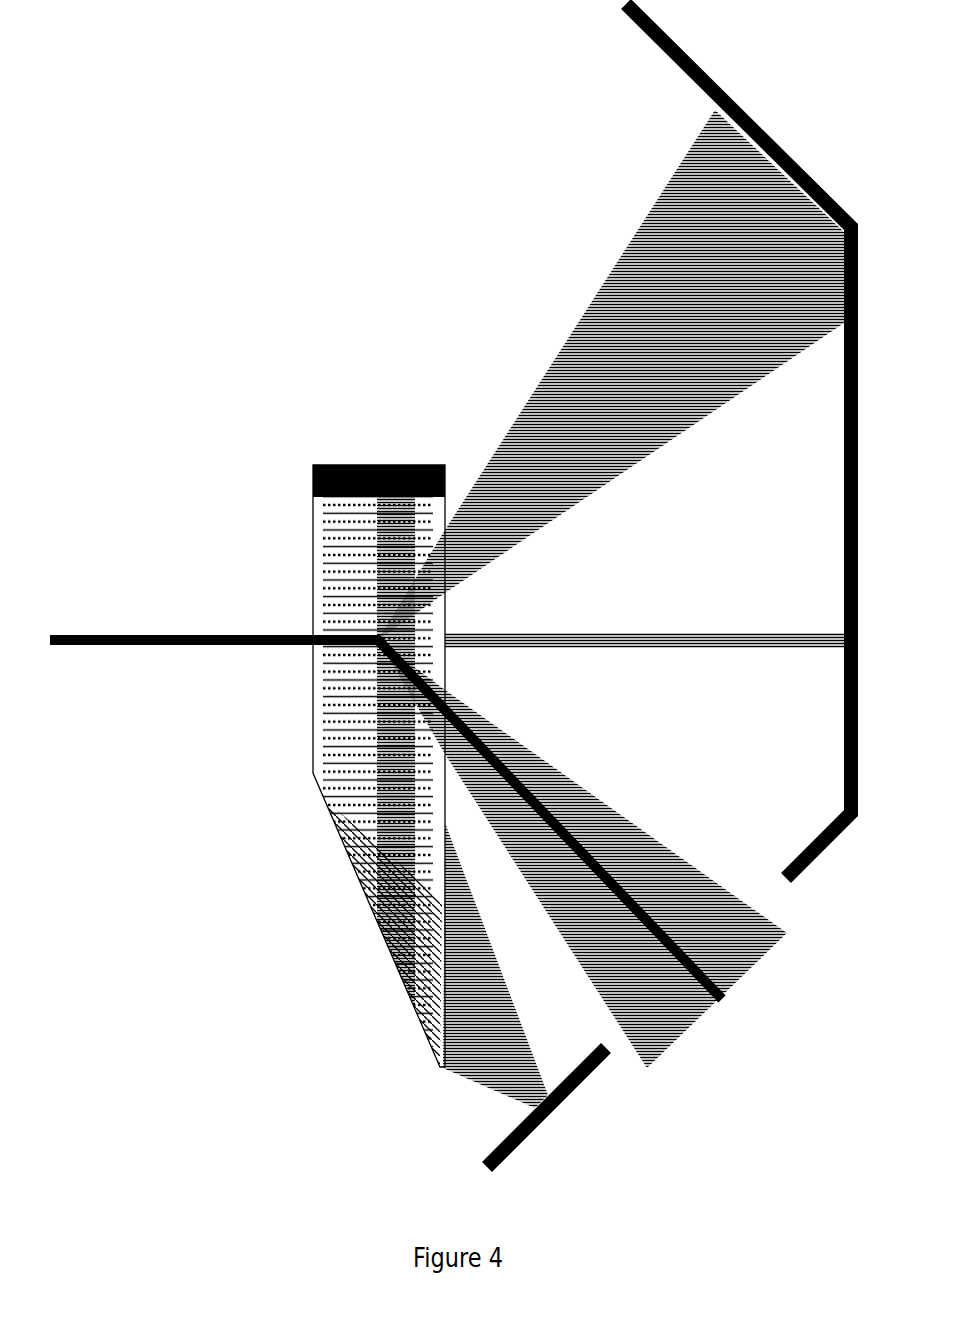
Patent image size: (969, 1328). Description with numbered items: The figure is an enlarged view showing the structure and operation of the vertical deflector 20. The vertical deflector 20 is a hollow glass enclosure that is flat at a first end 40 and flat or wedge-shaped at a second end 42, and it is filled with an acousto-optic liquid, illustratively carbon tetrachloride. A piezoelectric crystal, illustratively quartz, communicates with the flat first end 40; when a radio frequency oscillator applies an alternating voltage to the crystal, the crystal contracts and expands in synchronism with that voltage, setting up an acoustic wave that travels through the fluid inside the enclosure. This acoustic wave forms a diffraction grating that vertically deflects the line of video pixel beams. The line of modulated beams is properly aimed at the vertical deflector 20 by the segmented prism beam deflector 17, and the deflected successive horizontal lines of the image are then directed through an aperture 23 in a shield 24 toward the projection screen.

The segmented prism beam deflector 17 is at (386, 802).
The vertical deflector 20 is at (299, 539).
The aperture 23 is at (790, 897).
The shield 24 is at (738, 441).
The first end 40 is at (299, 478).
The second end 42 is at (392, 944).